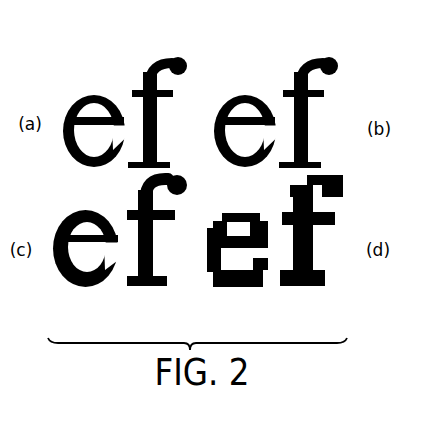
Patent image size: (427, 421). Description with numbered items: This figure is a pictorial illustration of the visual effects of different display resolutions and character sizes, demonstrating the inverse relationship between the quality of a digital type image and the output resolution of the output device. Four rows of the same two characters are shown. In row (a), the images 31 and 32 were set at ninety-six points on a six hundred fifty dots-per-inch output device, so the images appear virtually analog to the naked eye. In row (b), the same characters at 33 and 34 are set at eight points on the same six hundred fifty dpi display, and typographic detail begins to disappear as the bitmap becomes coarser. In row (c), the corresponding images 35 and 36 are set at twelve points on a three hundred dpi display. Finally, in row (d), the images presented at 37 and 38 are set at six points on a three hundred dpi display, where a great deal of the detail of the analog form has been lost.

The image 31 is at (88, 94).
The image 32 is at (163, 60).
The character image 33 is at (243, 93).
The character image 34 is at (314, 60).
The image 35 is at (85, 288).
The image 36 is at (147, 288).
The image 37 is at (240, 288).
The image 38 is at (300, 288).